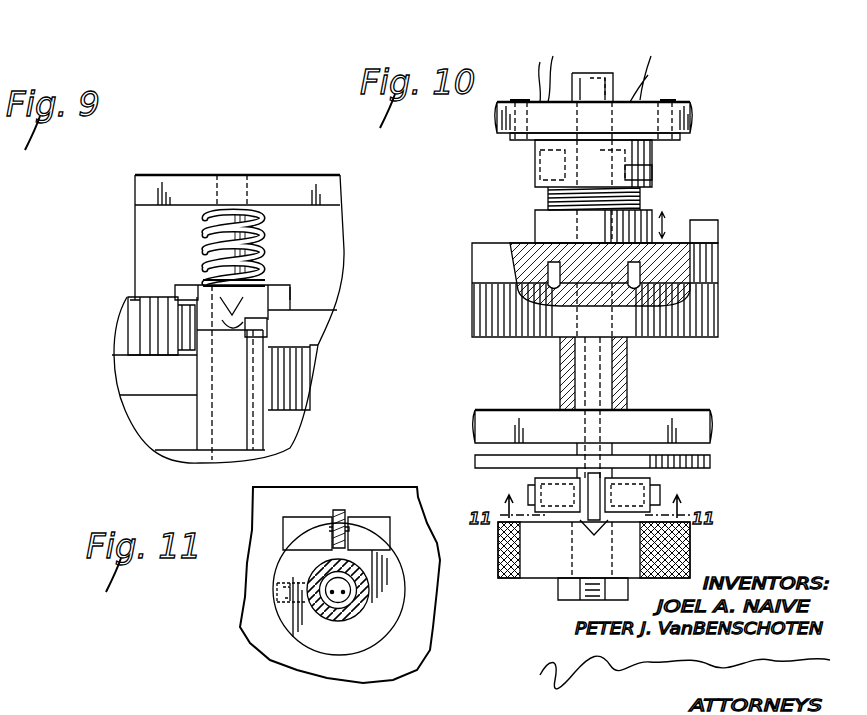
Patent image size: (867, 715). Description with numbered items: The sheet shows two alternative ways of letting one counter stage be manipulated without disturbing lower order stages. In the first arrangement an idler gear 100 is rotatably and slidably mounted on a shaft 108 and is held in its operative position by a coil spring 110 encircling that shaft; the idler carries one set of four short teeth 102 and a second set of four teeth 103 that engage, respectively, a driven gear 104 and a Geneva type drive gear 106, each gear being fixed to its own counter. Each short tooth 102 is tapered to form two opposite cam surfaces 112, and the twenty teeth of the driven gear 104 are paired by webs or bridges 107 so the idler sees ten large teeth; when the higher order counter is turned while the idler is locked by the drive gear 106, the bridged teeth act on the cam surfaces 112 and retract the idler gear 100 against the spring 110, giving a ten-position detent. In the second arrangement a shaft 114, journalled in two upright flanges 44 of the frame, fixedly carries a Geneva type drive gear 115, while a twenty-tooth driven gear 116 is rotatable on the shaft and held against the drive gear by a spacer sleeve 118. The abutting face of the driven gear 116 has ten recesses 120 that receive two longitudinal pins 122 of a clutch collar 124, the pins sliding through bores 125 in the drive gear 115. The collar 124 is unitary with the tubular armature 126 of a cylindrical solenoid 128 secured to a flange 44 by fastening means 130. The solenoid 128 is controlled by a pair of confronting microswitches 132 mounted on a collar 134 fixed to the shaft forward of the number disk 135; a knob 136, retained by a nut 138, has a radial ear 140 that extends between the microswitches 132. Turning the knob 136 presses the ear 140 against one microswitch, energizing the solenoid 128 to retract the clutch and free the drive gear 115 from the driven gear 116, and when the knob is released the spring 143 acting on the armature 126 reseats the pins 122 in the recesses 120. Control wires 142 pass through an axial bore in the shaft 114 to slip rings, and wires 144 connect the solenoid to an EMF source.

In FIG. 9, the upright flange 44 is at (312, 186).
In FIG. 10, the upright flange 44 is at (695, 427).
In FIG. 9, the idler gear 100 is at (244, 353).
In FIG. 9, the short teeth 102 is at (275, 293).
In FIG. 9, the teeth 103 is at (207, 337).
In FIG. 9, the driven gear 104 is at (148, 300).
In FIG. 9, the Geneva type drive gear 106 is at (298, 336).
In FIG. 9, the webs or bridges 107 is at (193, 302).
In FIG. 9, the shaft 108 is at (230, 242).
In FIG. 9, the coil spring 110 is at (202, 233).
In FIG. 9, the cam surfaces 112 is at (267, 332).
In FIG. 10, the shaft 114 is at (592, 390).
In FIG. 10, the Geneva type drive gear 115 is at (655, 277).
In FIG. 10, the driven gear 116 is at (718, 318).
In FIG. 10, the spacer sleeve 118 is at (567, 368).
In FIG. 10, the recesses 120 is at (630, 287).
In FIG. 10, the longitudinal pins 122 is at (718, 243).
In FIG. 10, the clutch collar 124 is at (535, 220).
In FIG. 10, the bores 125 is at (670, 235).
In FIG. 10, the tubular armature 126 is at (663, 163).
In FIG. 10, the cylindrical solenoid 128 is at (535, 167).
In FIG. 10, the fastening means 130 is at (650, 97).
In FIG. 10, the microswitches 132 is at (647, 494).
In FIG. 11, the microswitches 132 is at (373, 527).
In FIG. 10, the collar 134 is at (660, 490).
In FIG. 11, the collar 134 is at (377, 630).
In FIG. 10, the number disk 135 is at (710, 463).
In FIG. 10, the knob 136 is at (548, 562).
In FIG. 10, the nut 138 is at (567, 590).
In FIG. 10, the radial ear 140 is at (586, 478).
In FIG. 11, the radial ear 140 is at (342, 513).
In FIG. 10, the wires 142 is at (652, 68).
In FIG. 10, the spring 143 is at (640, 197).
In FIG. 10, the wires 144 is at (545, 68).